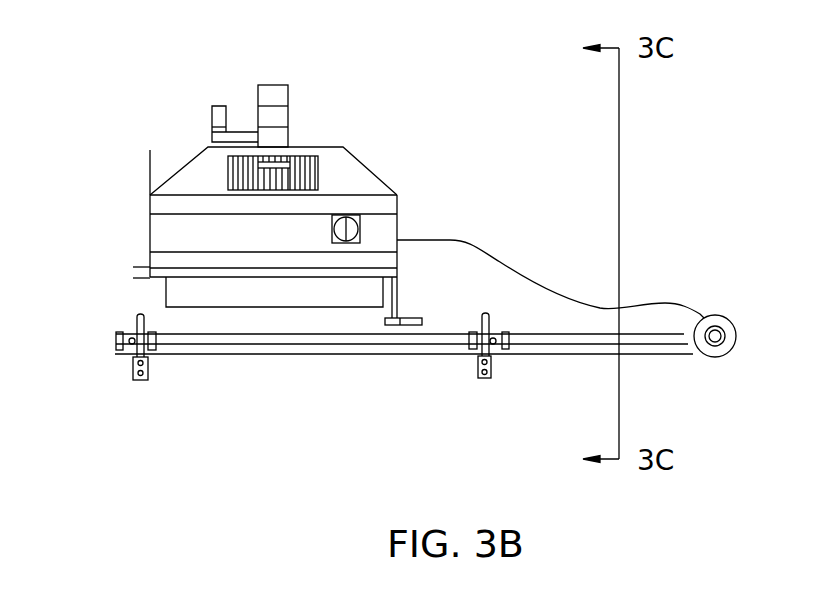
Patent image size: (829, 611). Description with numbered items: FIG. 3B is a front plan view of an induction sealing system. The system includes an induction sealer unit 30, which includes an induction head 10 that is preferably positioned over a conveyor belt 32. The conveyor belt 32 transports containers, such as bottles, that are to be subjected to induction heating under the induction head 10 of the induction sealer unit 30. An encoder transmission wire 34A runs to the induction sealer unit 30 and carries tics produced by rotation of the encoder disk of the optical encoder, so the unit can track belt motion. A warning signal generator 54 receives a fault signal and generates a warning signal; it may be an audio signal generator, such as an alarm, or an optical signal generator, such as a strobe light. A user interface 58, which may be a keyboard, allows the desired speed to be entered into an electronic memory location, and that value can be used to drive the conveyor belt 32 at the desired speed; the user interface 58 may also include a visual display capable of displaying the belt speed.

The induction head 10 is at (178, 290).
The induction sealer unit 30 is at (383, 187).
The conveyor belt 32 is at (315, 355).
The encoder transmission wire 34A is at (477, 248).
The warning signal generator 54 is at (272, 95).
The user interface 58 is at (300, 160).